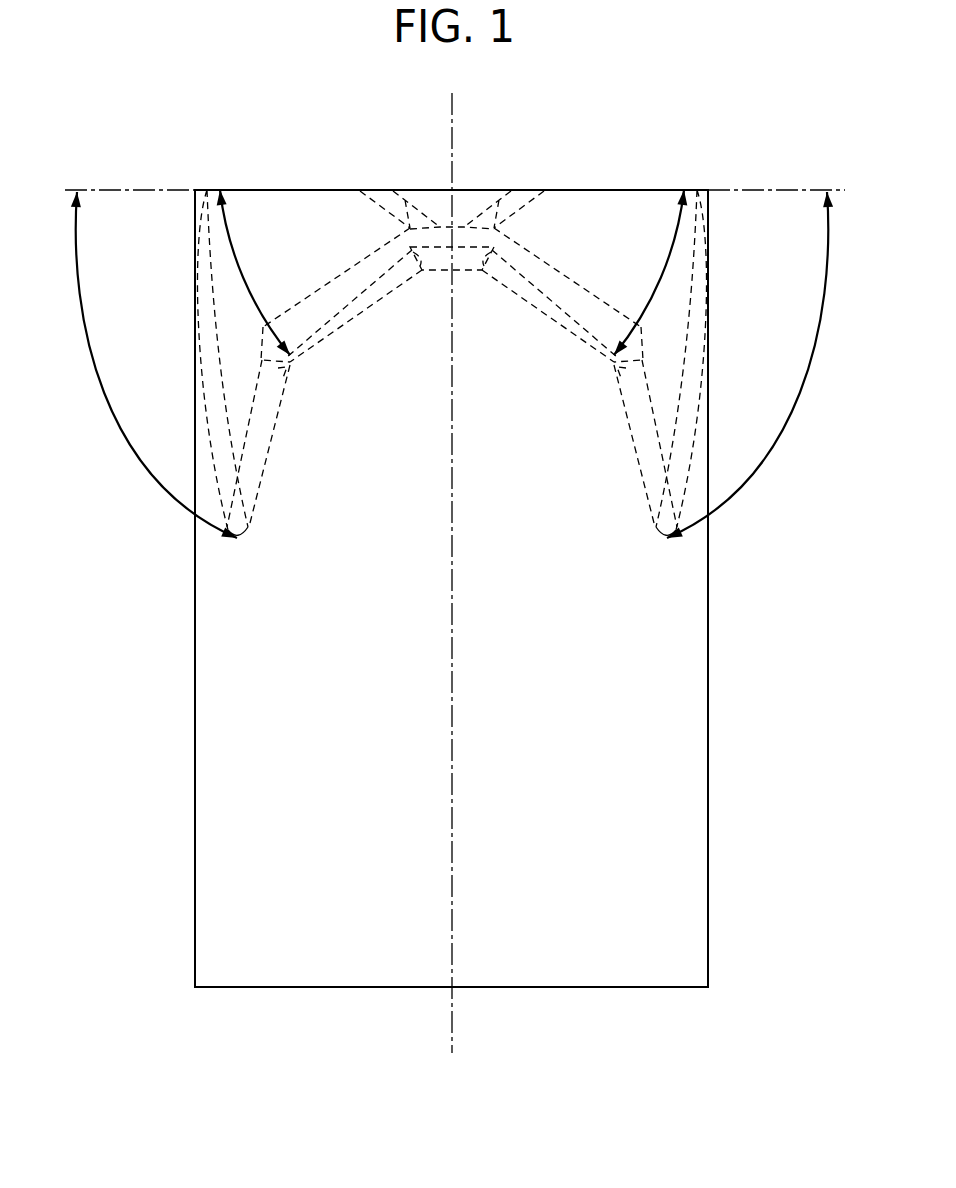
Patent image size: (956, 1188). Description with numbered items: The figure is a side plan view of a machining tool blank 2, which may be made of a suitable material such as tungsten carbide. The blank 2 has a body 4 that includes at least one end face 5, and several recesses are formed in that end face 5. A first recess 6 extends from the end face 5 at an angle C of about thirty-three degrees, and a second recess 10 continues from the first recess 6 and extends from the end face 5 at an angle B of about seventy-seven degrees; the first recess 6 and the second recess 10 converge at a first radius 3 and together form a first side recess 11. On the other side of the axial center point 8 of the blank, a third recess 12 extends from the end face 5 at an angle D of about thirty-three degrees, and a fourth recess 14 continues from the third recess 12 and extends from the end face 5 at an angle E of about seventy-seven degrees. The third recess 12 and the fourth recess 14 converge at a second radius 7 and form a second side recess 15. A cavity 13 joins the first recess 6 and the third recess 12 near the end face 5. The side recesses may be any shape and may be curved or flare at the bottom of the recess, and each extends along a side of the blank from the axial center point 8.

The machining tool blank 2 is at (567, 160).
The first radius 3 is at (275, 371).
The body 4 is at (712, 625).
The end face 5 is at (345, 190).
The first recess 6 is at (345, 290).
The second radius 7 is at (629, 371).
The axial center point 8 is at (453, 108).
The second recess 10 is at (258, 425).
The first side recess 11 is at (203, 363).
The third recess 12 is at (563, 282).
The cavity 13 is at (477, 200).
The fourth recess 14 is at (640, 432).
The second side recess 15 is at (692, 396).